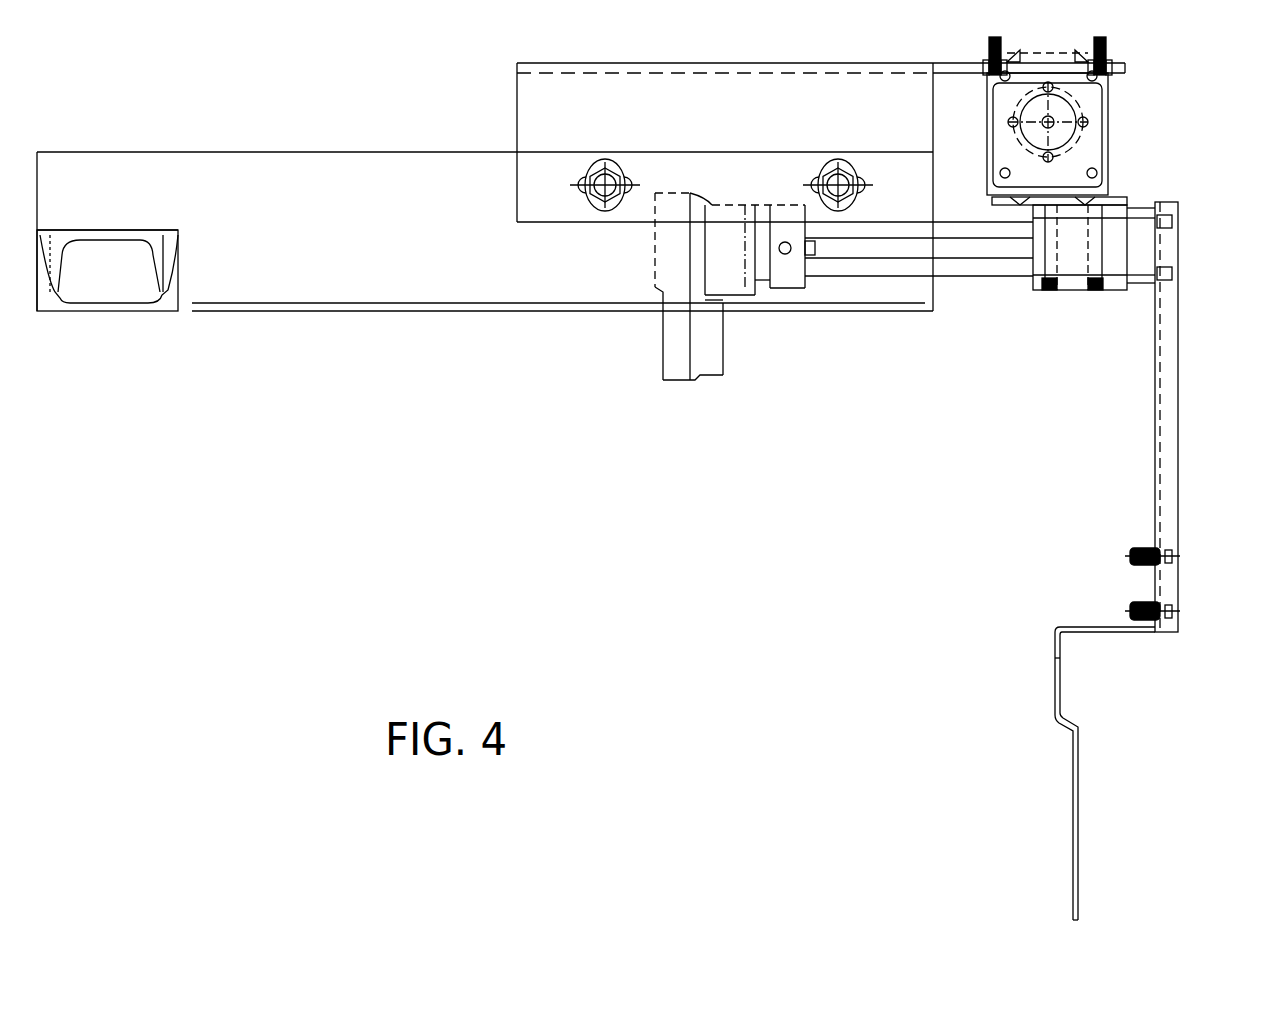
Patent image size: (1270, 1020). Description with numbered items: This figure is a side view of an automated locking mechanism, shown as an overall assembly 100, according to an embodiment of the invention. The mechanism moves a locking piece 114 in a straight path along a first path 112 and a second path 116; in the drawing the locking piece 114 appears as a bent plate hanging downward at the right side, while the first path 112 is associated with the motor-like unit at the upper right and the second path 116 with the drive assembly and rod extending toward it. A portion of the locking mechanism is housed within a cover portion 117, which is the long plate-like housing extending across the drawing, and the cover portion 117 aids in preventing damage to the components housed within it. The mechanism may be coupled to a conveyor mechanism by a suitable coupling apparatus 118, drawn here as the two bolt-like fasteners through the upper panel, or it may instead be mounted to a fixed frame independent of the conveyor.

The hair cutting apparatus assembly 100 is at (368, 92).
The first path 112 is at (1067, 100).
The locking piece 114 is at (1072, 762).
The second path 116 is at (945, 270).
The cover portion 117 is at (354, 305).
The coupling apparatus 118 is at (603, 157).